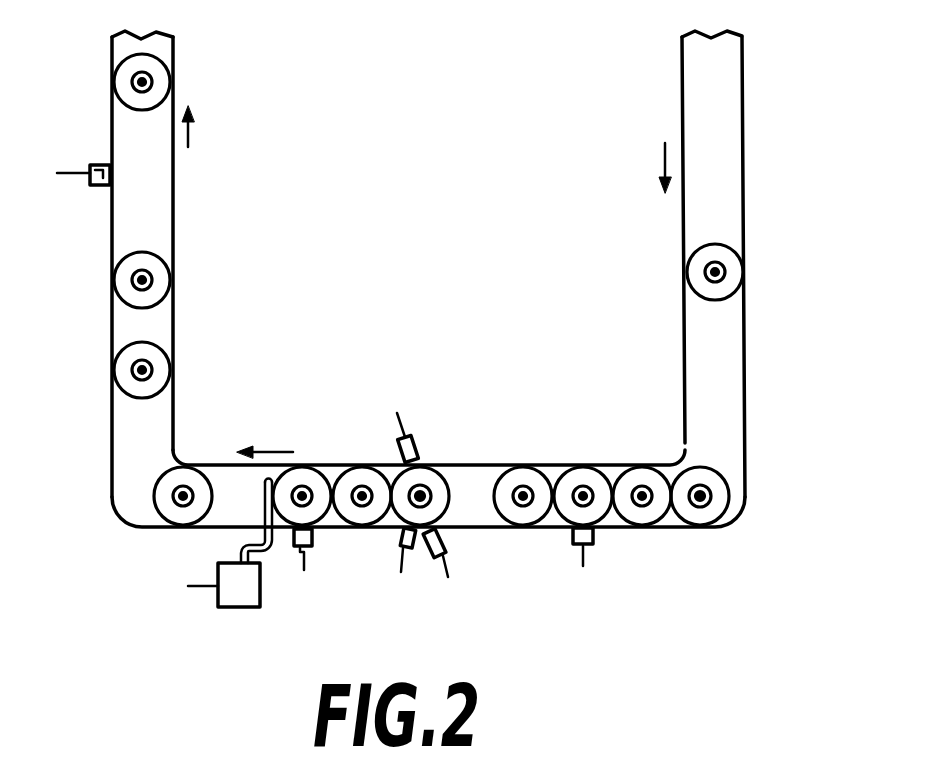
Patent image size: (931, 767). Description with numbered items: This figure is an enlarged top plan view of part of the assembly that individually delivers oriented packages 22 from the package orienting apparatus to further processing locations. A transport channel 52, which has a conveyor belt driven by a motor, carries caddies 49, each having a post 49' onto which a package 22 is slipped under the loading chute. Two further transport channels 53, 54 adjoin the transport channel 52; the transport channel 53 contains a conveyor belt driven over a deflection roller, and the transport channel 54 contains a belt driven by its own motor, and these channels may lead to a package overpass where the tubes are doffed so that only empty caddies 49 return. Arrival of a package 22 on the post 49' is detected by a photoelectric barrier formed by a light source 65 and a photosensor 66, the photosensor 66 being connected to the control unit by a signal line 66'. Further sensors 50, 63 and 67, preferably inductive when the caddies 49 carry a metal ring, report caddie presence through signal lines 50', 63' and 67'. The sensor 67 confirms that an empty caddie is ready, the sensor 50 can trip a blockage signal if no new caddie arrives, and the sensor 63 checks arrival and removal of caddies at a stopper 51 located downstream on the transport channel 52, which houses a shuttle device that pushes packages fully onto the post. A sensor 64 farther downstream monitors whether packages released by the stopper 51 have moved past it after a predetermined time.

The package 22 is at (352, 487).
The caddie 49 is at (553, 465).
The post 49' is at (632, 465).
The sensor 50 is at (403, 567).
The signal line 50' is at (407, 590).
The stopper 51 is at (252, 593).
The transport channel 52 is at (215, 529).
The transport channel 53 is at (745, 172).
The transport channel 54 is at (173, 200).
The sensor 63 is at (331, 551).
The signal line 63' is at (330, 573).
The sensor 64 is at (100, 187).
The light source 65 is at (447, 555).
The photosensor 66 is at (435, 442).
The signal line 66' is at (433, 411).
The sensor 67 is at (624, 558).
The signal line 67' is at (610, 576).